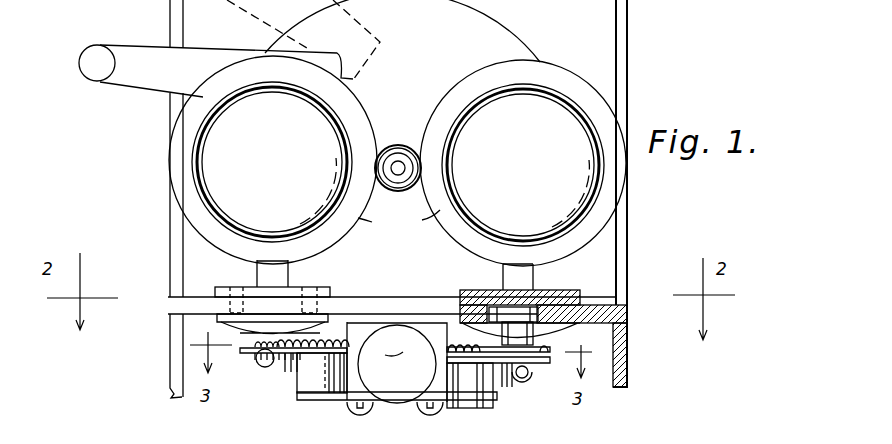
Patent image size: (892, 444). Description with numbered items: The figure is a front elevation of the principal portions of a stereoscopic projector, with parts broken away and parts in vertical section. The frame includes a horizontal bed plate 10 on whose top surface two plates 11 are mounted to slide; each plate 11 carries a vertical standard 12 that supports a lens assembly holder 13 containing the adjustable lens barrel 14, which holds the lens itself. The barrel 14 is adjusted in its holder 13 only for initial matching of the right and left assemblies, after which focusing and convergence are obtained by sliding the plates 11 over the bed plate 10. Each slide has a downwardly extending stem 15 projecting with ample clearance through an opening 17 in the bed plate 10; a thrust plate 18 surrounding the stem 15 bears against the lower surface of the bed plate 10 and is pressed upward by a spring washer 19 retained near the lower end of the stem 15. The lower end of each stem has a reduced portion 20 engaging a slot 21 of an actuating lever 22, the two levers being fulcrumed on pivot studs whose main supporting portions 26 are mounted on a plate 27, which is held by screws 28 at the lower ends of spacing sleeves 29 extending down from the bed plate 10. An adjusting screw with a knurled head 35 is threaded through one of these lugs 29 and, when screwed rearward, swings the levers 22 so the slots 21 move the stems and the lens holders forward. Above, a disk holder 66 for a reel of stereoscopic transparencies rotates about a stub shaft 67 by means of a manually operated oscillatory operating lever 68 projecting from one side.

The bed plate 10 is at (627, 312).
The plate 11 is at (300, 288).
The vertical standard 12 is at (285, 264).
The lens assembly holder 13 is at (422, 220).
The lens barrel 14 is at (302, 86).
The stem 15 is at (513, 326).
The opening 17 is at (558, 313).
The thrust plate 18 is at (323, 320).
The spring washer 19 is at (332, 339).
The reduced portion 20 is at (268, 368).
The slot 21 is at (290, 378).
The actuating lever 22 is at (255, 355).
The main supporting portion 26 is at (302, 386).
The plate 27 is at (458, 400).
The screw 28 is at (372, 408).
The spacing sleeve 29 is at (365, 385).
The knurled head 35 is at (394, 346).
The disk holder 66 is at (490, 25).
The stub shaft 67 is at (398, 146).
The operating lever 68 is at (97, 47).